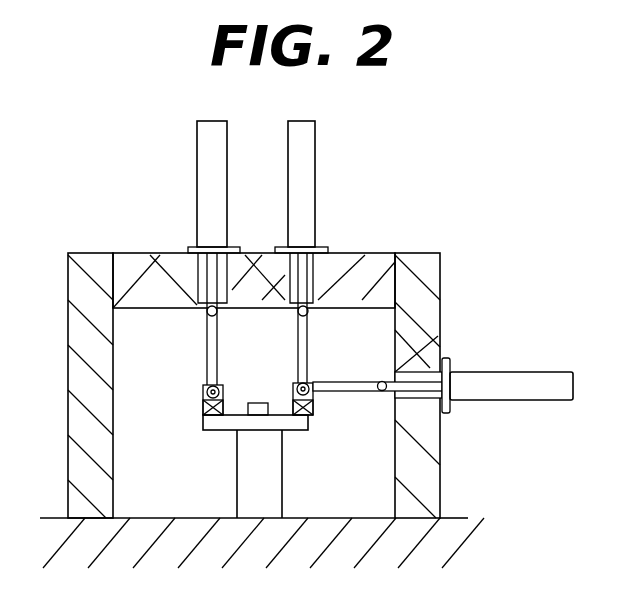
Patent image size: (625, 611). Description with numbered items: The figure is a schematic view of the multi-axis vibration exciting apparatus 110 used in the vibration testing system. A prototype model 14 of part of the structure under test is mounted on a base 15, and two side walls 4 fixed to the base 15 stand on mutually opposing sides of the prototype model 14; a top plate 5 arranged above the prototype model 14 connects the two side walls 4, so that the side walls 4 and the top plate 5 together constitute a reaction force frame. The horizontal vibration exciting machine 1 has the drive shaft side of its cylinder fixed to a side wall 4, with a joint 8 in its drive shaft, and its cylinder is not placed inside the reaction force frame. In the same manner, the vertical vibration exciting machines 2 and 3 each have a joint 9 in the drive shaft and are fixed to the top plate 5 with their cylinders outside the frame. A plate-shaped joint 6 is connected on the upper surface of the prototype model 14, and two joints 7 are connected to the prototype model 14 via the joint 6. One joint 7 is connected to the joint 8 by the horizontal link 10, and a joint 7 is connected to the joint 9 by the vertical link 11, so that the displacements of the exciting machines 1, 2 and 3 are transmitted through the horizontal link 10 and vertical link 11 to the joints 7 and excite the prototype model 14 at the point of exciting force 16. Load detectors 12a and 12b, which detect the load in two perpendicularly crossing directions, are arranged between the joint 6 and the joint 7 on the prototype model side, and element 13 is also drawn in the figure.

The multi-axis vibration exciting apparatus 110 is at (104, 251).
The horizontal vibration exciting machine 1 is at (504, 373).
The vertical vibration exciting machine 2 is at (304, 168).
The vertical vibration exciting machine 3 is at (196, 151).
The side wall 4 is at (420, 300).
The top plate 5 is at (366, 264).
The joint 6 is at (205, 426).
The joint 7 is at (205, 390).
The joint 8 is at (399, 371).
The joint 9 is at (213, 322).
The horizontal link 10 is at (352, 391).
The vertical link 11 is at (213, 330).
The load detector 12a is at (313, 406).
The load detector 12b is at (203, 410).
The connecting rod 13 is at (210, 362).
The prototype model 14 is at (260, 498).
The base 15 is at (435, 535).
The point of exciting force 16 is at (257, 434).